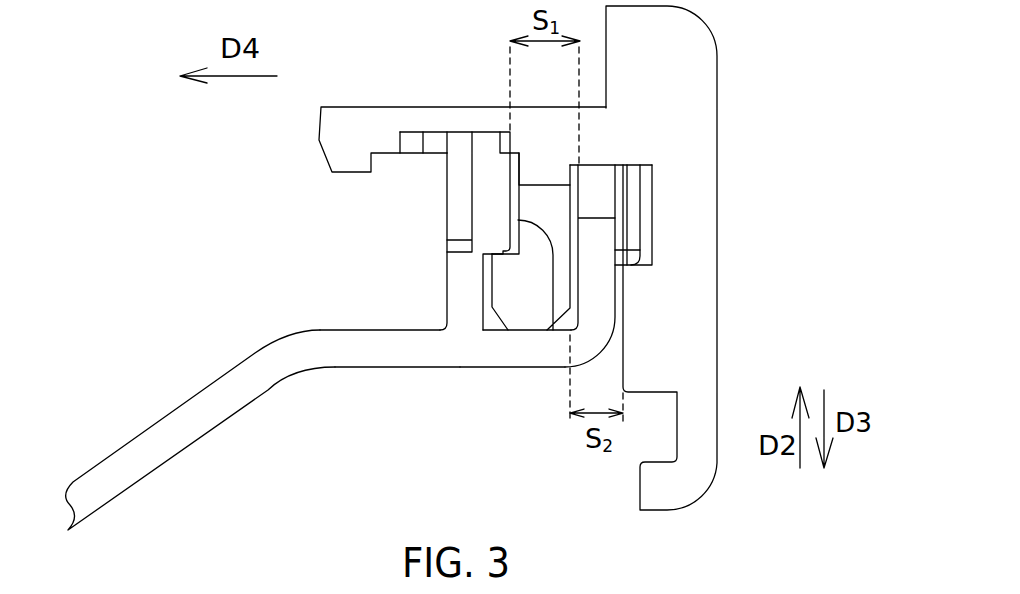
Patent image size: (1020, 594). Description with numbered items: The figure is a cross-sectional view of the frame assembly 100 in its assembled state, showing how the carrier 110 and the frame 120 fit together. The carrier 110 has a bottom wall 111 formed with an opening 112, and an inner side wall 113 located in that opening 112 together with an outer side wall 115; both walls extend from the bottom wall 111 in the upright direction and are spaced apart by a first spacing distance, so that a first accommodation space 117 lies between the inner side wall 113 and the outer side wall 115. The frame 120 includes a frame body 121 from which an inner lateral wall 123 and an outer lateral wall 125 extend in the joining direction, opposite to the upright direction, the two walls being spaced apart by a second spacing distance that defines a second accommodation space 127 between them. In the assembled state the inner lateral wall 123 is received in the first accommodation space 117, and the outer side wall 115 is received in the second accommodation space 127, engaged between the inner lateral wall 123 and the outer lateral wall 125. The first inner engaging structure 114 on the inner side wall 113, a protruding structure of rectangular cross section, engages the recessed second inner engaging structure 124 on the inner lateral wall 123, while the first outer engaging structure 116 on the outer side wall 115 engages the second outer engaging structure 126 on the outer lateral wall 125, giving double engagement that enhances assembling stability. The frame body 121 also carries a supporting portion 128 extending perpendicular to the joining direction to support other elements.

The frame assembly 100 is at (130, 42).
The carrier 110 is at (177, 427).
The bottom wall 111 is at (375, 358).
The opening 112 is at (520, 349).
The inner side wall 113 is at (465, 292).
The first inner engaging structure 114 is at (487, 208).
The outer side wall 115 is at (598, 292).
The first outer engaging structure 116 is at (635, 180).
The first accommodation space 117 is at (478, 327).
The frame 120 is at (675, 73).
The frame body 121 is at (600, 138).
The inner lateral wall 123 is at (510, 292).
The second inner engaging structure 124 is at (552, 330).
The outer lateral wall 125 is at (678, 346).
The second outer engaging structure 126 is at (652, 236).
The second accommodation space 127 is at (645, 256).
The supporting portion 128 is at (355, 107).